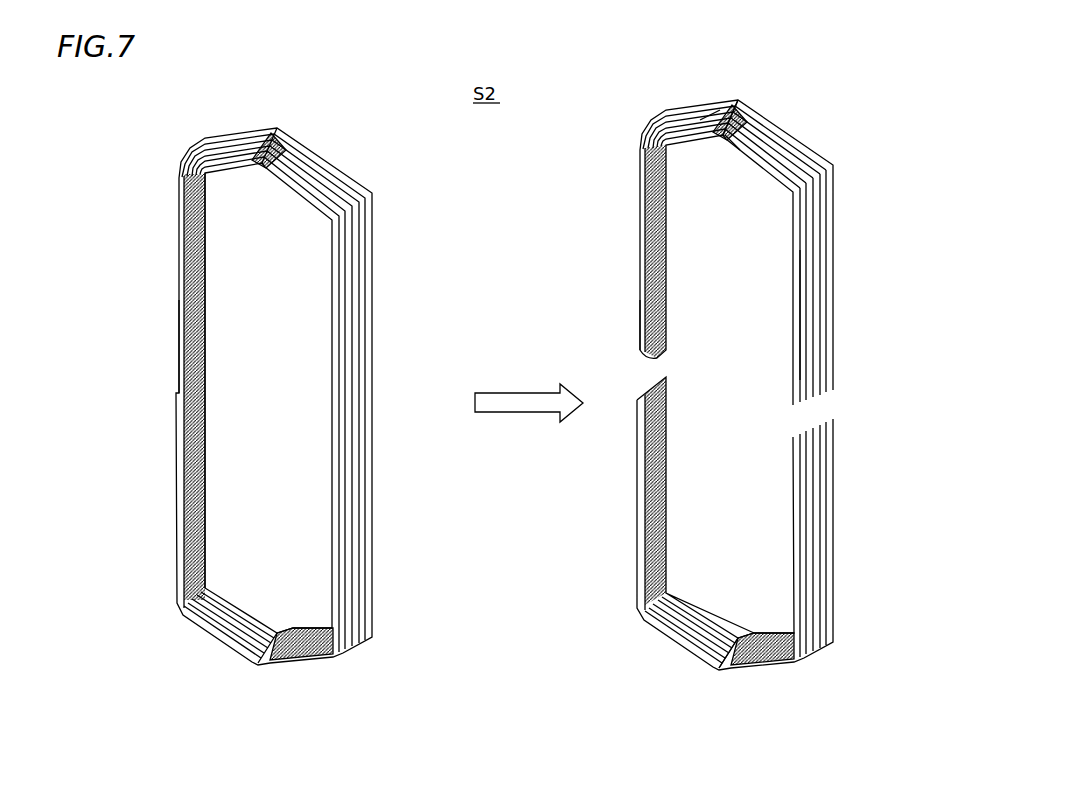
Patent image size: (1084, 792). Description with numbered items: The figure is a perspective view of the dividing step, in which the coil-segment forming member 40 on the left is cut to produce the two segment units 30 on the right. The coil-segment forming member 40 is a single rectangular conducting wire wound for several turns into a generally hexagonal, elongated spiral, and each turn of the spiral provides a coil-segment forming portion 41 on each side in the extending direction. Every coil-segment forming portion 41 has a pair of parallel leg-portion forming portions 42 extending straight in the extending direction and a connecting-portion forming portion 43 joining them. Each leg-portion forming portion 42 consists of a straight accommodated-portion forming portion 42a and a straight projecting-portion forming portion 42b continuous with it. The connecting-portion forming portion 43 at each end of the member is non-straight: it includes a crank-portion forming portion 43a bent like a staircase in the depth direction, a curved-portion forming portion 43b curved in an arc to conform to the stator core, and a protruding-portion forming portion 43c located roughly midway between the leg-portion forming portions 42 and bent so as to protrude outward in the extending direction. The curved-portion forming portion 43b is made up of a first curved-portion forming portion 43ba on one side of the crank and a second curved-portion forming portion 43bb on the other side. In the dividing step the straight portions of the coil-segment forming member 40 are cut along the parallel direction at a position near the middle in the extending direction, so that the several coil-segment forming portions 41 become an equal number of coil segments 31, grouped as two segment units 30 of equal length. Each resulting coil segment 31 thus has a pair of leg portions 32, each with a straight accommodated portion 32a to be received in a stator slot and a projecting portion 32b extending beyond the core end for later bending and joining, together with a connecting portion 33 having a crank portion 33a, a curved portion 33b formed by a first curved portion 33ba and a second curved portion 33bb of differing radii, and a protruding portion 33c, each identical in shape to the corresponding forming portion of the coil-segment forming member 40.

The segment unit 30 is at (838, 140).
The coil segment 31 is at (833, 273).
The leg portion 32 is at (732, 399).
The accommodated portion 32a is at (634, 190).
The projecting portion 32b is at (634, 332).
The connecting portion 33 is at (668, 104).
The crank portion 33a is at (722, 138).
The curved portion 33b is at (728, 386).
The first curved portion 33ba is at (728, 386).
The second curved portion 33bb is at (772, 697).
The protruding portion 33c is at (747, 97).
The coil-segment forming member 40 is at (381, 167).
The coil-segment forming portion 41 is at (372, 303).
The leg-portion forming portion 42 is at (268, 407).
The accommodated-portion forming portion 42a is at (172, 207).
The projecting-portion forming portion 42b is at (172, 366).
The connecting-portion forming portion 43 is at (207, 132).
The crank-portion forming portion 43a is at (262, 167).
The curved-portion forming portion 43b is at (265, 400).
The first curved-portion forming portion 43ba is at (265, 400).
The second curved-portion forming portion 43bb is at (310, 693).
The protruding-portion forming portion 43c is at (284, 125).